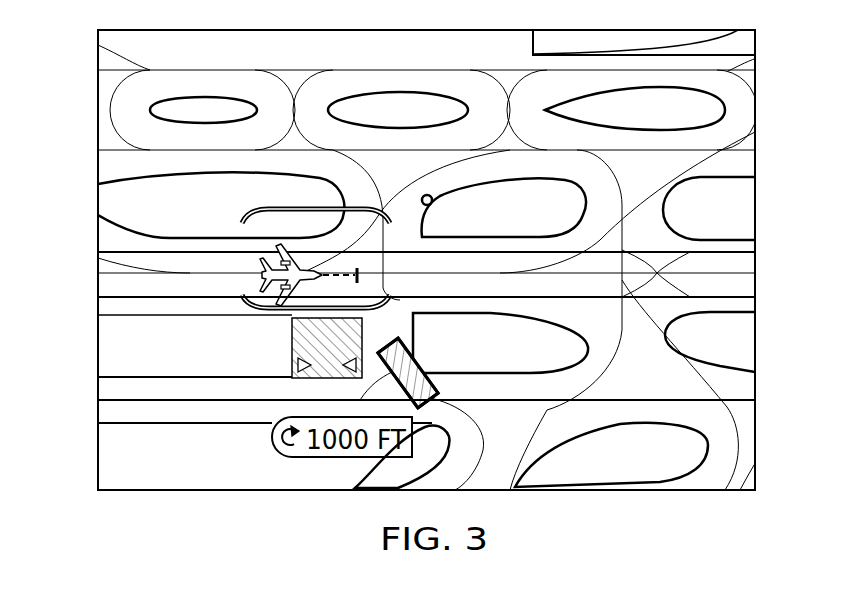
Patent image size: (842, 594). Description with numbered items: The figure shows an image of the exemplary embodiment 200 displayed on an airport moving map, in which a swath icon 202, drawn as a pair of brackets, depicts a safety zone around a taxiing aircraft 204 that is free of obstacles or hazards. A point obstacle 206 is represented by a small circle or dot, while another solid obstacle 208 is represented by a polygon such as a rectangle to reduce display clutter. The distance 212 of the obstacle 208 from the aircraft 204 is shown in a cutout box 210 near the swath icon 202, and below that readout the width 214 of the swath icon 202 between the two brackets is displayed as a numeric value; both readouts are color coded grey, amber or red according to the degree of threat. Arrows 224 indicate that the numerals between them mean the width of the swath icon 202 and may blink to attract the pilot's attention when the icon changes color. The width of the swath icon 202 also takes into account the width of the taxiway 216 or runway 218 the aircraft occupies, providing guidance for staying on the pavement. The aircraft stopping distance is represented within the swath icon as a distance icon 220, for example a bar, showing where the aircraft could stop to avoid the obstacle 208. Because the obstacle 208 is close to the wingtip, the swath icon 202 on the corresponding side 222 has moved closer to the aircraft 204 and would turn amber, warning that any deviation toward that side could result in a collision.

The first exemplary embodiment 200 is at (412, 322).
The swath icon 202 is at (268, 208).
The aircraft 204 is at (262, 268).
The point obstacle 206 is at (421, 195).
The solid obstacle 208 is at (398, 347).
The cutout box 210 is at (292, 369).
The distance 212 is at (413, 328).
The width 214 is at (300, 378).
The taxiway 216 is at (103, 390).
The runway 218 is at (103, 286).
The distance icon 220 is at (423, 228).
The corresponding side 222 is at (252, 300).
The arrows 224 is at (297, 363).